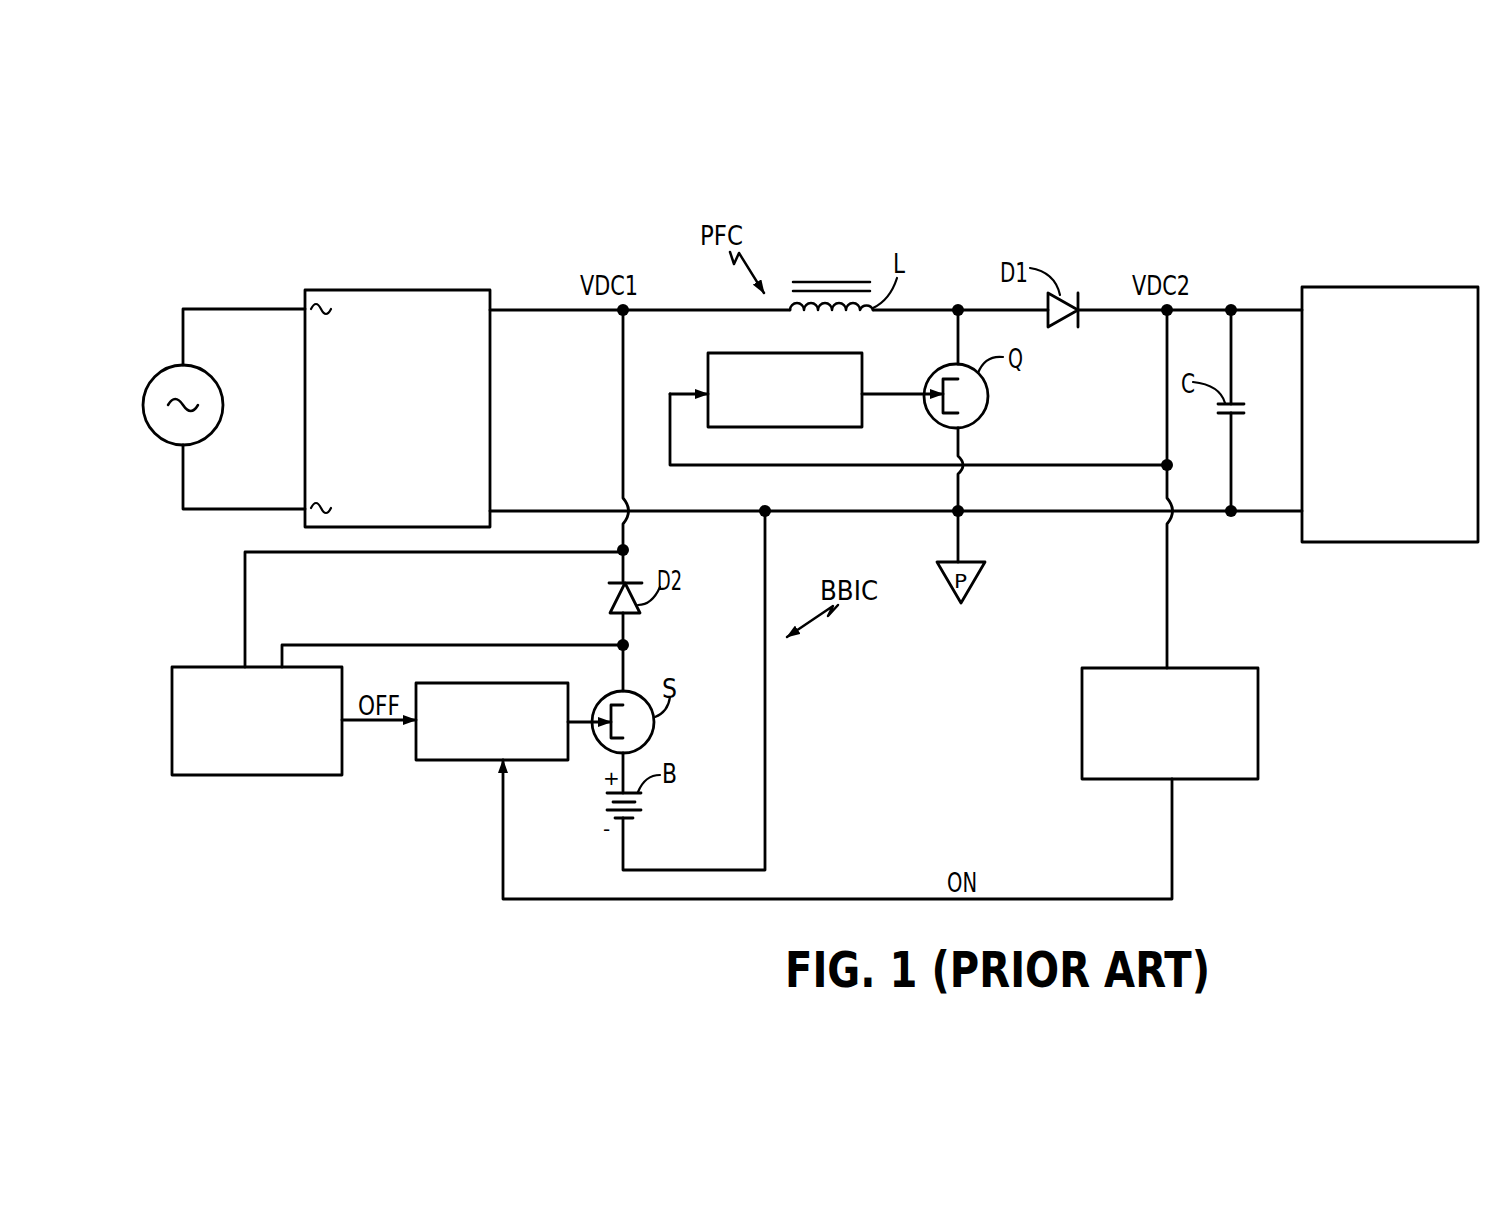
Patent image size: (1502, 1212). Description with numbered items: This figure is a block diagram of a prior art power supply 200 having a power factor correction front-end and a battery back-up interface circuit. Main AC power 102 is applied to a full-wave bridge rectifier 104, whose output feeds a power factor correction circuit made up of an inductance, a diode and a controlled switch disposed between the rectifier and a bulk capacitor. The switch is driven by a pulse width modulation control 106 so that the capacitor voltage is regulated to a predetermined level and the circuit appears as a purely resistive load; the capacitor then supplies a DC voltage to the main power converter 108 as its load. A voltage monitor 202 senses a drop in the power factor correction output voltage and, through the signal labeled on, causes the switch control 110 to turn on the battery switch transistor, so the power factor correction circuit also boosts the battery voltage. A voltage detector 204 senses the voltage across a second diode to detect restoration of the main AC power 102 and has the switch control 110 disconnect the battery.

The main AC power 102 is at (211, 377).
The full-wave bridge rectifier 104 is at (403, 288).
The pulse width modulation control 106 is at (760, 352).
The main power converter 108 is at (1385, 285).
The switch control 110 is at (465, 762).
The power supply 200 is at (1157, 237).
The voltage monitor 202 is at (1118, 667).
The voltage detector 204 is at (210, 665).